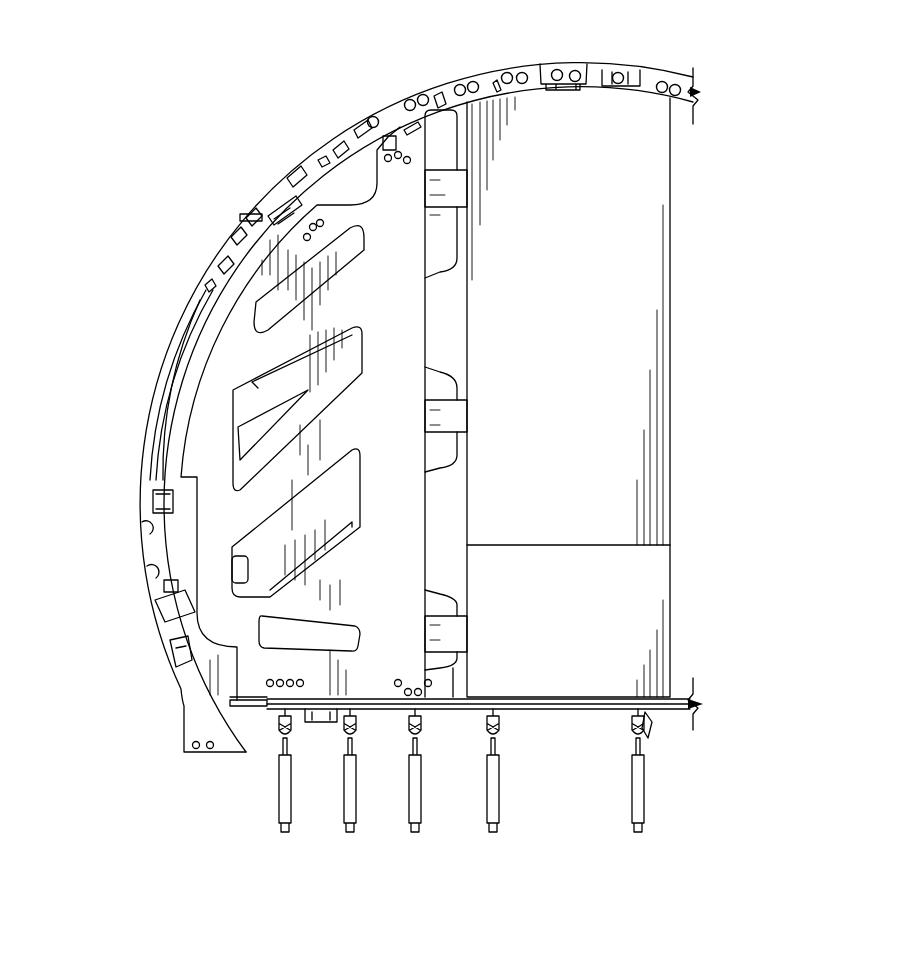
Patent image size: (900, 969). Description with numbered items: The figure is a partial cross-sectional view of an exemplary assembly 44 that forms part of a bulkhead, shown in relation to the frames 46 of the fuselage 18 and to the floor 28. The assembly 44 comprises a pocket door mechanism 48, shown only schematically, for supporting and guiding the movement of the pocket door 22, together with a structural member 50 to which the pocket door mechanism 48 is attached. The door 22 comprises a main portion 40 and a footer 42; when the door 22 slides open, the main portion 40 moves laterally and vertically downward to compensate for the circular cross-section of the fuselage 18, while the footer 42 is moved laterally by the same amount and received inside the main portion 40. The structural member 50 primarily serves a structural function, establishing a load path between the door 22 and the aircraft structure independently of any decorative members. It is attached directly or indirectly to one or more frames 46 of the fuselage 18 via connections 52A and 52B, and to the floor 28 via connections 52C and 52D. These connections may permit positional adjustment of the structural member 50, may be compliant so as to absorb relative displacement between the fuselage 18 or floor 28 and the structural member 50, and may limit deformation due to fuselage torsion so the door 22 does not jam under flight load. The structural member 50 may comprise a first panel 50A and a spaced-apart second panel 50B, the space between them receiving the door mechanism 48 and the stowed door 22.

The fuselage 18 is at (359, 407).
The frame 46 is at (359, 407).
The door 22 is at (619, 397).
The floor 28 is at (678, 699).
The main portion 40 is at (591, 321).
The footer 42 is at (591, 627).
The assembly 44 is at (792, 270).
The pocket door mechanism 48 is at (440, 175).
The structural member 50 is at (342, 185).
The first panel 50A is at (247, 353).
The second panel 50B is at (247, 407).
The connection 52A is at (384, 126).
The connection 52B is at (283, 211).
The connection 52C is at (432, 687).
The connection 52D is at (265, 694).